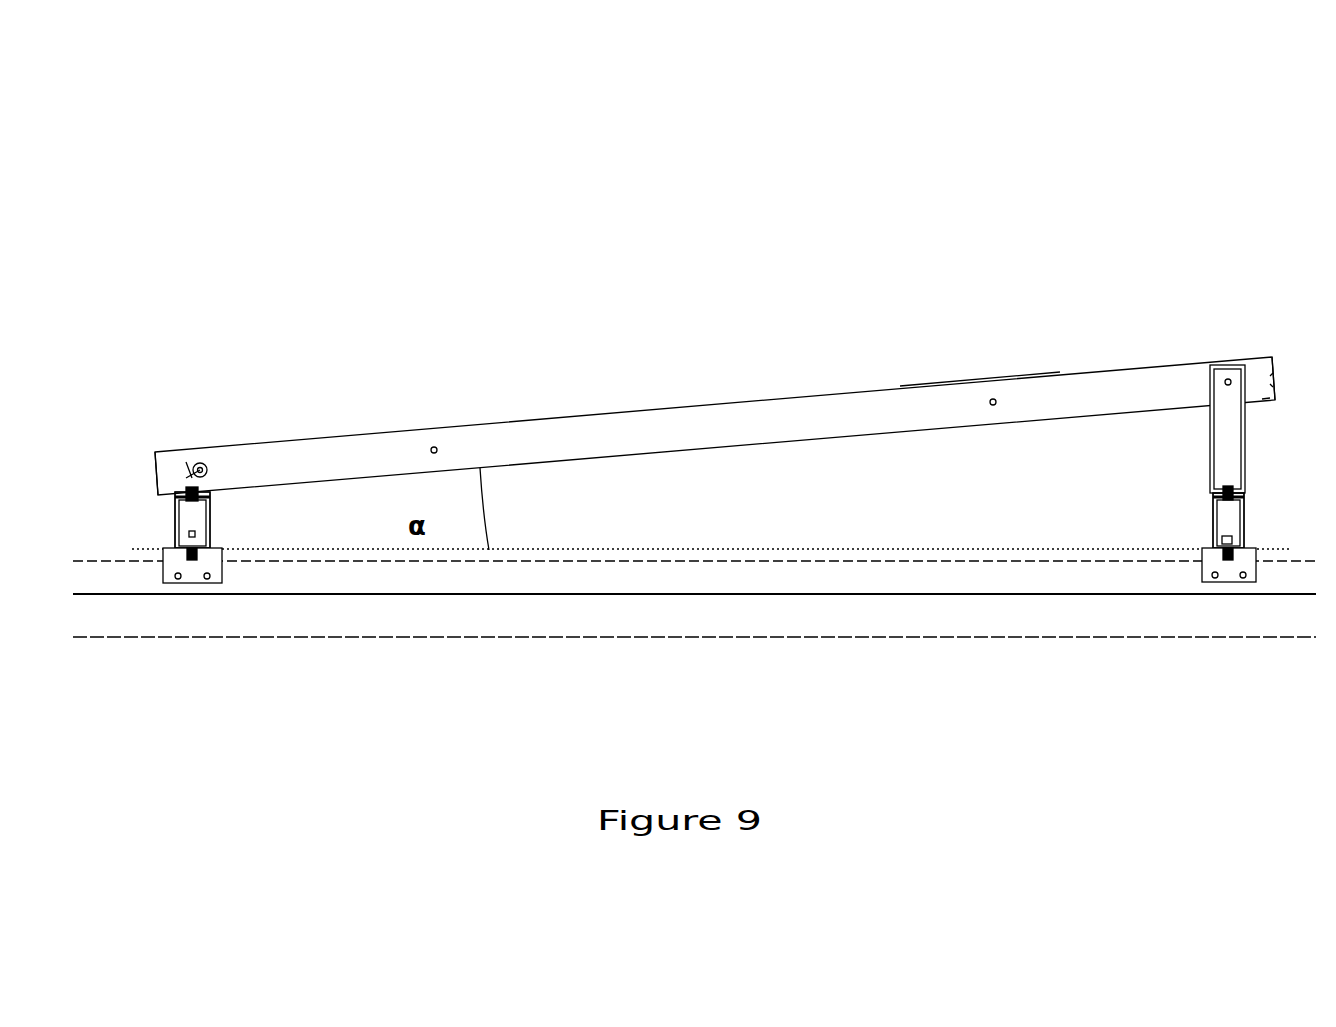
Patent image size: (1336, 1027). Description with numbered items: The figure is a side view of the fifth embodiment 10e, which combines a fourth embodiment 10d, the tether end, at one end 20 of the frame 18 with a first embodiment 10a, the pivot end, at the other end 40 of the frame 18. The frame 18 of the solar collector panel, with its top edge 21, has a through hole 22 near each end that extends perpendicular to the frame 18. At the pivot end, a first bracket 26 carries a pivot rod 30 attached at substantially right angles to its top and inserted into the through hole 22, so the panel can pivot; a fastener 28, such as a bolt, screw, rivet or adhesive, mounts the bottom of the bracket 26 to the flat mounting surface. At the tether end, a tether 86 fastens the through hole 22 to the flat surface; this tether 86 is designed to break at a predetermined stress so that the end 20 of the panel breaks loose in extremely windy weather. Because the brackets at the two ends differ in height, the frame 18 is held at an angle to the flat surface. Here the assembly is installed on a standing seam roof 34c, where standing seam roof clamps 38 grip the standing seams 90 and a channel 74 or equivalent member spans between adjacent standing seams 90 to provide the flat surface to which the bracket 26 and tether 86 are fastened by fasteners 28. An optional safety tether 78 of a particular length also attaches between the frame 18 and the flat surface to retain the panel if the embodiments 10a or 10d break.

The first embodiment 10a is at (1223, 282).
The fourth embodiment 10d is at (193, 420).
The fifth embodiment 10e is at (688, 333).
The frame for solar collector panel 18 is at (928, 400).
The one end of frame 20 is at (153, 478).
The top edge of frame 21 is at (1058, 372).
The through hole in frame 22 is at (1228, 382).
The pivot rod 30 is at (1227, 429).
The first bracket 26 is at (200, 515).
The fastener 28 is at (205, 466).
The standing seam roof 34c is at (877, 637).
The standing seam roof clamp 38 is at (1208, 565).
The other end of frame 40 is at (1273, 370).
The bar, channel or equivalent member 74 is at (1222, 520).
The safety tether 78 is at (188, 528).
The tether 86 is at (213, 478).
The standing seam 90 is at (762, 580).